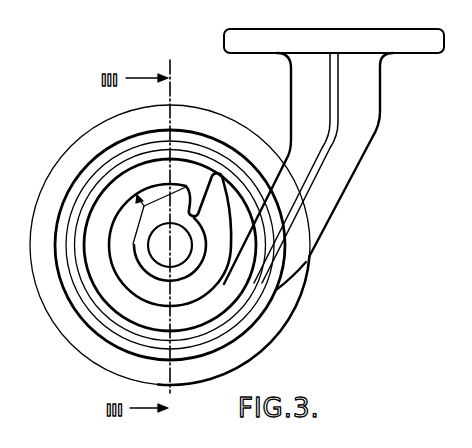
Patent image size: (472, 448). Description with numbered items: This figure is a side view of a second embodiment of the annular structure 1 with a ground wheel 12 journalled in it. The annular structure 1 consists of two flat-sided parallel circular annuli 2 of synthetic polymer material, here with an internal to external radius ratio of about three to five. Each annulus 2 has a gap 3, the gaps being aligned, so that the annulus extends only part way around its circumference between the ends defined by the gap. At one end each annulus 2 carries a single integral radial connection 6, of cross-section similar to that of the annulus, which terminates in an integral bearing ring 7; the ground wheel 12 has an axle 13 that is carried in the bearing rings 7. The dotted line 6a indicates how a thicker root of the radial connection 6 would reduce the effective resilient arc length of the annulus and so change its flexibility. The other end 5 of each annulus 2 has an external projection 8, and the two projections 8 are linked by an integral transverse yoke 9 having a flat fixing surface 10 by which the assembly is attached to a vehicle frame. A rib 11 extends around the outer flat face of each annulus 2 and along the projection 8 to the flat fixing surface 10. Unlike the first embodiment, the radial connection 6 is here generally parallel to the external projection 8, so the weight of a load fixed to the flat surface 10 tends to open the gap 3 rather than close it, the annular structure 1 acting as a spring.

The annular structure 1 is at (100, 317).
The annulus 2 is at (122, 341).
The gap 3 is at (243, 187).
The end 5 is at (252, 302).
The integral radial connection 6 is at (214, 198).
The dotted line showing thicker root 6a is at (150, 185).
The bearing ring 7 is at (157, 254).
The external projection 8 is at (339, 177).
The transverse yoke 9 is at (384, 38).
The flat fixing surface 10 is at (322, 30).
The rib 11 is at (110, 175).
The ground wheel 12 is at (250, 342).
The axle 13 is at (150, 256).